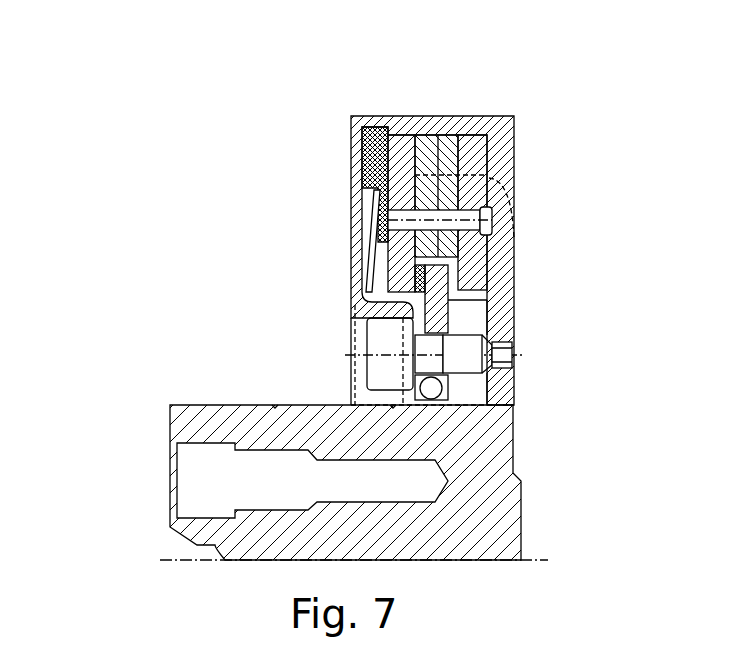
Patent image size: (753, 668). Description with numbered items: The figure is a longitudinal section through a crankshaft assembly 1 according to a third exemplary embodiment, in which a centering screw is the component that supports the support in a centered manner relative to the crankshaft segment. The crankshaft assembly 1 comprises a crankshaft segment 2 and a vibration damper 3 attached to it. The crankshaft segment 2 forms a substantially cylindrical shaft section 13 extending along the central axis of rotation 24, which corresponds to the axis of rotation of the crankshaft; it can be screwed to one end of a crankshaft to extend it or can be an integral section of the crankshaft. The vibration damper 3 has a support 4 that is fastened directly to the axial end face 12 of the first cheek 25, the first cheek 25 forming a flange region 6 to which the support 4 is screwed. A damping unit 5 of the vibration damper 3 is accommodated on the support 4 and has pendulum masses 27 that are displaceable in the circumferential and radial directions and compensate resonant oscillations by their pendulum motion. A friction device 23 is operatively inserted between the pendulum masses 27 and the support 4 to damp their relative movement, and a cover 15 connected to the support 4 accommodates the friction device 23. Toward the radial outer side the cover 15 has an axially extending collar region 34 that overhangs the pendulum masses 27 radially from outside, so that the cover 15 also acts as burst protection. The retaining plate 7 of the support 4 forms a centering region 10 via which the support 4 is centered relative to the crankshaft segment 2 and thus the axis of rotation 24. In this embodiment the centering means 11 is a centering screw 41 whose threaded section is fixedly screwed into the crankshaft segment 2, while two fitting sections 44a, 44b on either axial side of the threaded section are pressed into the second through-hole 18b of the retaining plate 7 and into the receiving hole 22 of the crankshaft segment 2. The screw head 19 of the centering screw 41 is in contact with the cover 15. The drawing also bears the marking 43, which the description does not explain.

The crankshaft assembly 1 is at (215, 180).
The crankshaft segment 2 is at (285, 482).
The shaft section 13 is at (182, 425).
The vibration damper 3 is at (378, 82).
The damping unit 5 is at (500, 147).
The friction device 23 is at (362, 107).
The cover 15 is at (407, 157).
The collar region 34 is at (391, 118).
The pendulum masses 27 is at (399, 153).
The centering region 10 is at (185, 295).
The support 4 is at (523, 297).
The retaining plate 7 is at (455, 300).
The screw head 19 is at (390, 362).
The second through-hole 18b is at (400, 340).
The first fitting section 44a is at (392, 378).
The receiving hole 22 is at (500, 342).
The pin head 43 is at (512, 355).
The second fitting section 44b is at (512, 362).
The centering means 11 is at (573, 365).
The centering screw 41 is at (512, 372).
The flange region 6 is at (495, 432).
The first cheek 25 is at (512, 392).
The end face 12 is at (418, 392).
The axis of rotation 24 is at (155, 558).